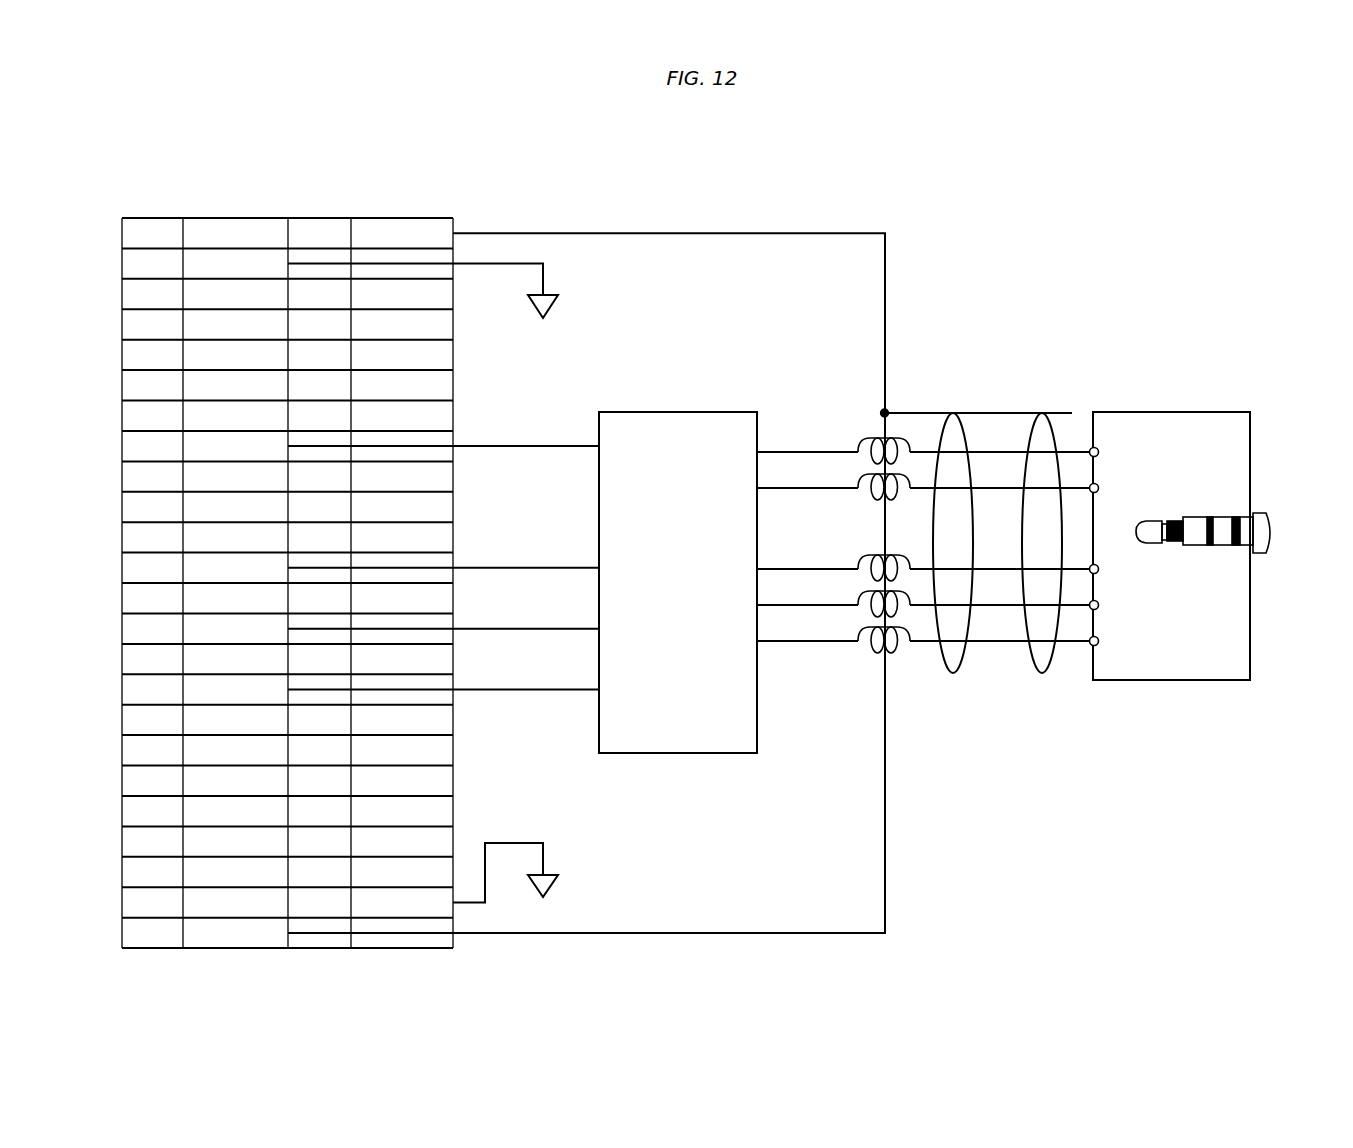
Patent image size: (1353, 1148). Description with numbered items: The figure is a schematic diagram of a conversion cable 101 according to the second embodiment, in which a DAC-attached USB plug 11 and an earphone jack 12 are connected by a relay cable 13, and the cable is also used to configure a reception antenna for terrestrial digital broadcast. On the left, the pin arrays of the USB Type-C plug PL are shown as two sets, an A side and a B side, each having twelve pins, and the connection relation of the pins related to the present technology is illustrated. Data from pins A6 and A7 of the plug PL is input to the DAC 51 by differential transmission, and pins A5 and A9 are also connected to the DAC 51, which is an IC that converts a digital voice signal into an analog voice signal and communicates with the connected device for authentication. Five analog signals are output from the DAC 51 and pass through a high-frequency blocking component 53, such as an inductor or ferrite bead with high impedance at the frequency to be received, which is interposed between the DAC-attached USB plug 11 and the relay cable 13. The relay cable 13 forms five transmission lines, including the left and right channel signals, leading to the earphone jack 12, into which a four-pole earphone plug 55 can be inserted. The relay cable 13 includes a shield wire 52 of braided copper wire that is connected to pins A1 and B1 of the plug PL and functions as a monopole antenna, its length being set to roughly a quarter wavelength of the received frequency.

The conversion cable 101 is at (656, 149).
The DAC-attached USB plug 11 is at (562, 208).
The plug PL is at (357, 217).
The shield wire 52 is at (821, 233).
The DAC 51 is at (674, 411).
The high-frequency blocking component 53 is at (861, 673).
The relay cable 13 is at (986, 384).
The earphone jack 12 is at (1156, 411).
The earphone plug 55 is at (1218, 517).